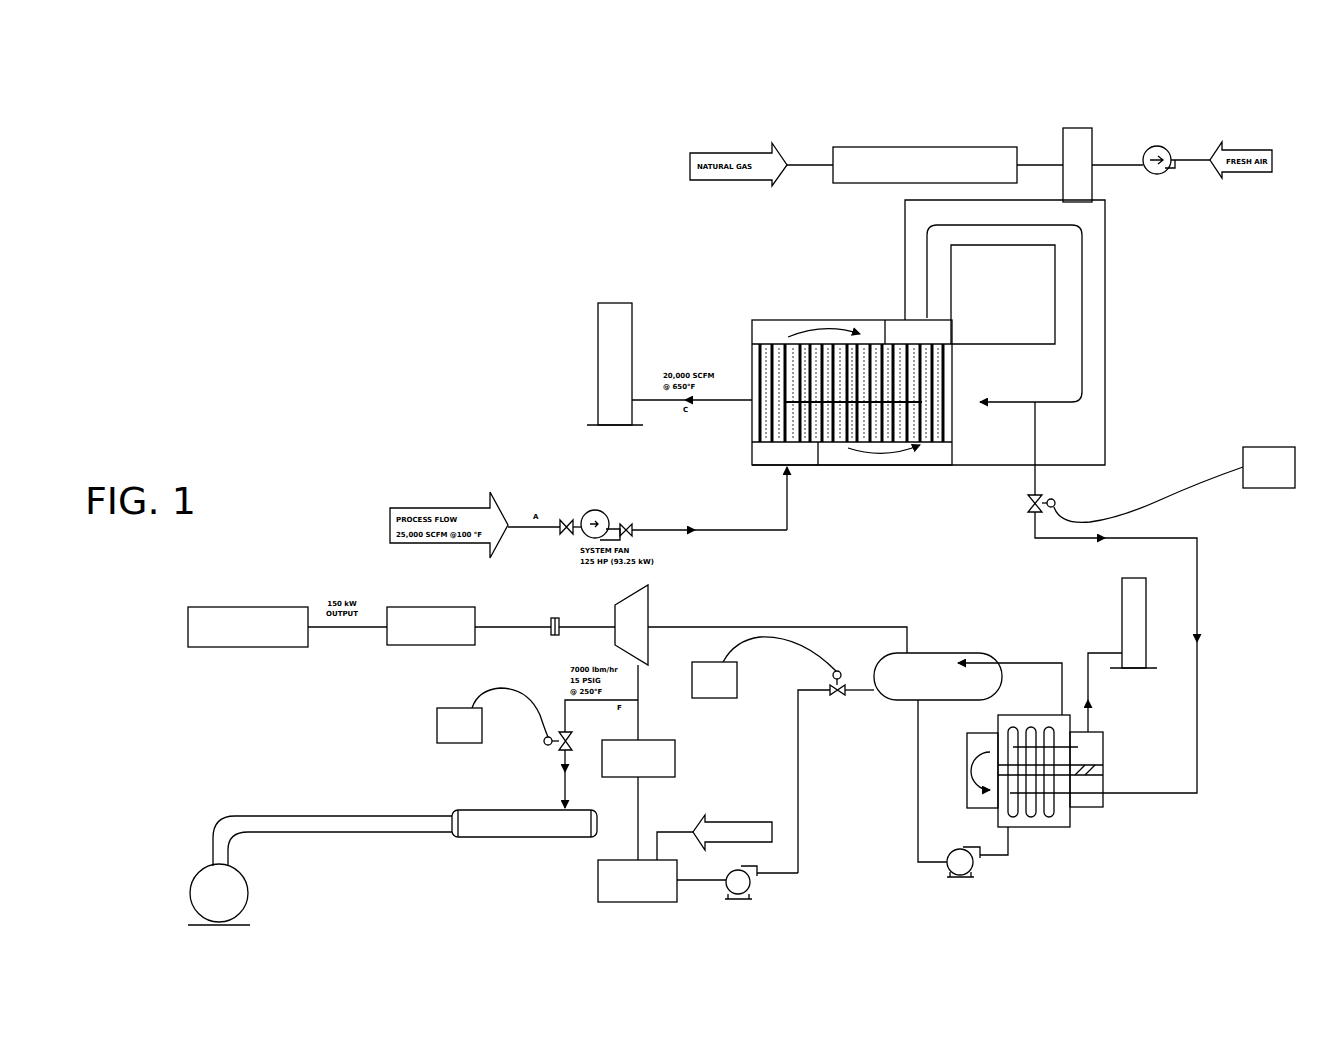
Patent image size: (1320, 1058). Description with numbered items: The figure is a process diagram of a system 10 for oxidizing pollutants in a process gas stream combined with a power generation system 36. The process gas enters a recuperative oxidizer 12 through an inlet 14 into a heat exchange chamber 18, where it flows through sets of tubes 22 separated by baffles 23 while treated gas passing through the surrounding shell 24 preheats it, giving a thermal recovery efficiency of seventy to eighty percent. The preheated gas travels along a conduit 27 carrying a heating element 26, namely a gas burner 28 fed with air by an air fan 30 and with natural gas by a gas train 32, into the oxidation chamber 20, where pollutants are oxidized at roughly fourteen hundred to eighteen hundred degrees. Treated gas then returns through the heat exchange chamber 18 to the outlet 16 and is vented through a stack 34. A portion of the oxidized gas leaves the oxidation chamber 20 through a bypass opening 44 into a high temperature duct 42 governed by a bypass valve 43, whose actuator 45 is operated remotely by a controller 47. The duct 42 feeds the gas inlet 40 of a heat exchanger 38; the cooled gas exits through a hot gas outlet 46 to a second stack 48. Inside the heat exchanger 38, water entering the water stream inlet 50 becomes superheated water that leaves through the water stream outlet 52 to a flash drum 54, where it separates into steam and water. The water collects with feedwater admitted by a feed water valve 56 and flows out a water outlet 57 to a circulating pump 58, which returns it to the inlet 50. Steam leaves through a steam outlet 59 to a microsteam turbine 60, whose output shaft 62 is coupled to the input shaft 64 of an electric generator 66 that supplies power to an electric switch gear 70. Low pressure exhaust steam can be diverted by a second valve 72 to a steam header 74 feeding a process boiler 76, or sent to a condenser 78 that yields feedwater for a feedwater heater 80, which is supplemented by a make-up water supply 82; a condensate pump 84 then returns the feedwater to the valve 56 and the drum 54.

The system for oxidizing pollutants 10 is at (612, 258).
The recuperative oxidizer 12 is at (1112, 305).
The inlet 14 is at (789, 470).
The outlet 16 is at (798, 383).
The heat exchange chamber 18 is at (924, 450).
The oxidation chamber 20 is at (813, 448).
The tubes 22 is at (768, 372).
The baffles 23 is at (885, 340).
The shell 24 is at (766, 338).
The heating element 26 is at (1022, 140).
The conduit 27 is at (922, 212).
The gas burner 28 is at (1068, 137).
The air fan 30 is at (1157, 146).
The gas train 32 is at (848, 150).
The stack 34 is at (598, 337).
The power generation system 36 is at (1080, 803).
The heat exchanger 38 is at (1074, 818).
The gas inlet 40 is at (1110, 787).
The high temperature duct 42 is at (1200, 573).
The bypass valve 43 is at (1030, 502).
The bypass opening 44 is at (1035, 470).
The actuator 45 is at (1057, 487).
The hot gas outlet 46 is at (1093, 728).
The controller 47 is at (1270, 445).
The stack 48 is at (1127, 613).
The water stream inlet 50 is at (1010, 830).
The water stream outlet 52 is at (1060, 710).
The flash drum 54 is at (945, 655).
The feed water valve 56 is at (834, 678).
The water outlet 57 is at (920, 700).
The circulating pump 58 is at (548, 622).
The steam outlet 59 is at (910, 652).
The microsteam turbine 60 is at (632, 612).
The output shaft 62 is at (582, 627).
The input shaft 64 is at (495, 630).
The electric generator 66 is at (432, 607).
The electric switch gear 70 is at (250, 607).
The second valve 72 is at (560, 752).
The steam header 74 is at (475, 835).
The process boiler 76 is at (248, 890).
The condenser 78 is at (677, 763).
The feedwater heater 80 is at (597, 887).
The make-up water supply 82 is at (730, 822).
The condensate pump 84 is at (760, 888).